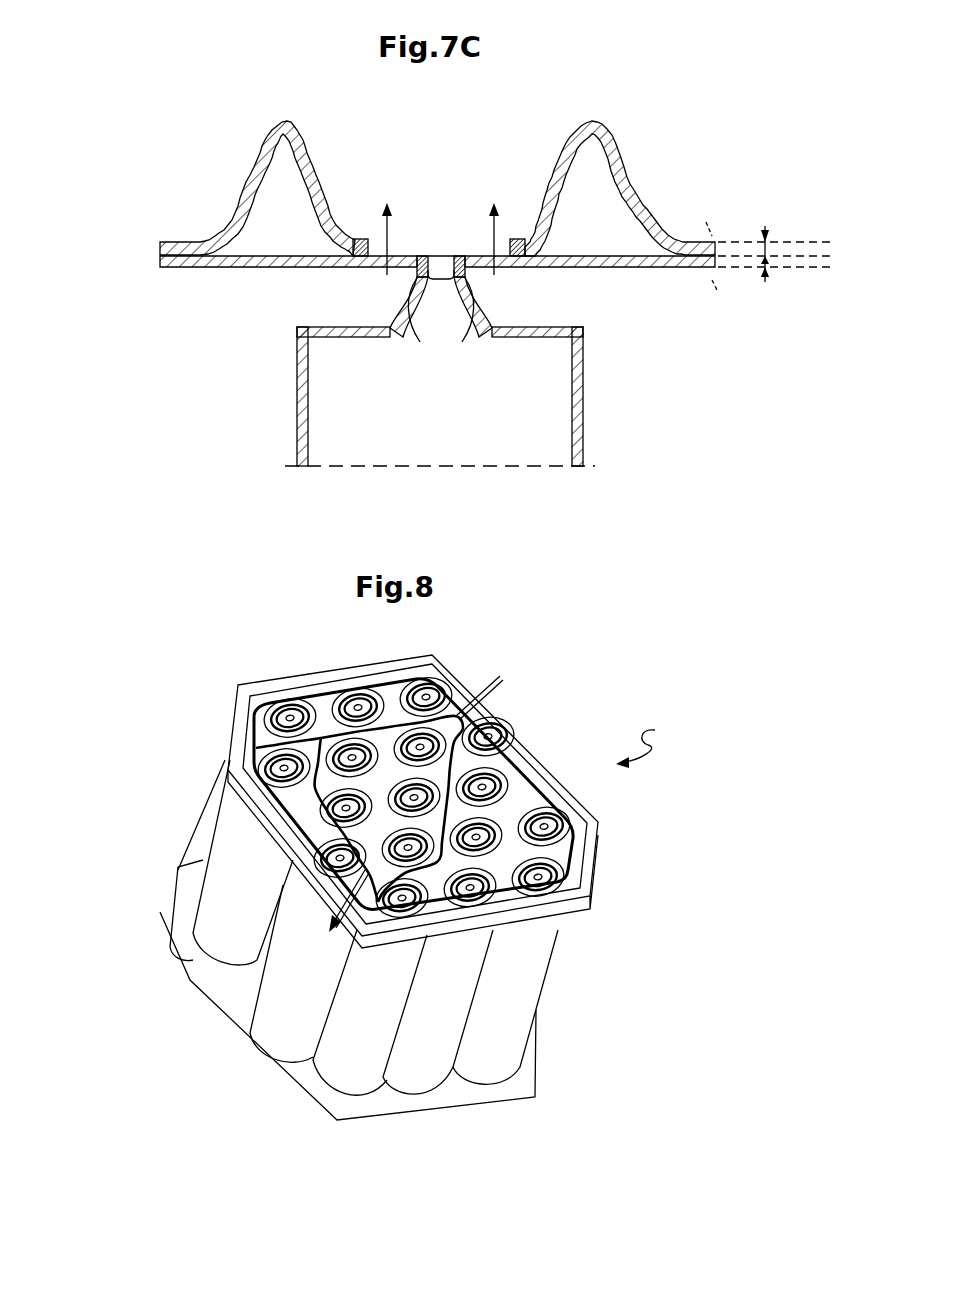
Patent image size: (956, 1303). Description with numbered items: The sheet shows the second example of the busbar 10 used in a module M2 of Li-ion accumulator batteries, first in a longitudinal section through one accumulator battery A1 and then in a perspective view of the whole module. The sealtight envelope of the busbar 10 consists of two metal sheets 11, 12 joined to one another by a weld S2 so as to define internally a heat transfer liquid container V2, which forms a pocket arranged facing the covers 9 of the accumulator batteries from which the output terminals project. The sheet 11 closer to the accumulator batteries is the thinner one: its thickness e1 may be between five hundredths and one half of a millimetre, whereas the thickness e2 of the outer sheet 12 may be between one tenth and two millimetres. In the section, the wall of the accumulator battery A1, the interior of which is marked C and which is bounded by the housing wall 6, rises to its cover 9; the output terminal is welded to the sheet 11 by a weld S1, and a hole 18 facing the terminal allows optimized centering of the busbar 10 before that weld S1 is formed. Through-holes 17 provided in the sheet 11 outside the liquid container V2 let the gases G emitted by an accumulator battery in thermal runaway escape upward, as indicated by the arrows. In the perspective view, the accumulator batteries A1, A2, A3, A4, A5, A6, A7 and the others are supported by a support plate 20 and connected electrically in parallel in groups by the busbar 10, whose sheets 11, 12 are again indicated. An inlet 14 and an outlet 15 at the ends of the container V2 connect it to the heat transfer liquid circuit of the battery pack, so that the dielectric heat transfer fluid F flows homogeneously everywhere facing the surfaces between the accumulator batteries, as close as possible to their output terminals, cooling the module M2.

In FIG. 7C, the busbar 10 is at (108, 192).
In FIG. 8, the busbar 10 is at (680, 812).
In FIG. 7C, the sheet 11 is at (188, 267).
In FIG. 8, the sheet 11 is at (568, 862).
In FIG. 7C, the sheet 12 is at (231, 208).
In FIG. 8, the sheet 12 is at (563, 790).
In FIG. 7C, the heat transfer liquid container V2 is at (296, 226).
In FIG. 7C, the weld S1 is at (421, 257).
In FIG. 7C, the hole 18 is at (440, 265).
In FIG. 7C, the gases G is at (439, 234).
In FIG. 7C, the thickness e2 is at (774, 241).
In FIG. 7C, the thickness e1 is at (768, 257).
In FIG. 7C, the weld S2 is at (385, 268).
In FIG. 7C, the through-hole 17 is at (415, 276).
In FIG. 7C, the cover 9 is at (560, 328).
In FIG. 7C, the cell housing 6 is at (583, 373).
In FIG. 7C, the accumulator battery A1 is at (322, 393).
In FIG. 8, the accumulator battery A1 is at (232, 1018).
In FIG. 7C, the cell interior C is at (449, 435).
In FIG. 8, the inlet 14 is at (505, 678).
In FIG. 8, the dielectric heat transfer fluid F is at (528, 775).
In FIG. 8, the module M2 is at (657, 739).
In FIG. 8, the outlet 15 is at (316, 893).
In FIG. 8, the accumulator battery A2 is at (285, 1050).
In FIG. 8, the accumulator battery A3 is at (358, 1088).
In FIG. 8, the accumulator battery A4 is at (402, 1085).
In FIG. 8, the accumulator battery A5 is at (484, 1068).
In FIG. 8, the accumulator battery A6 is at (207, 920).
In FIG. 8, the accumulator battery A7 is at (222, 843).
In FIG. 8, the support plate 20 is at (547, 1005).